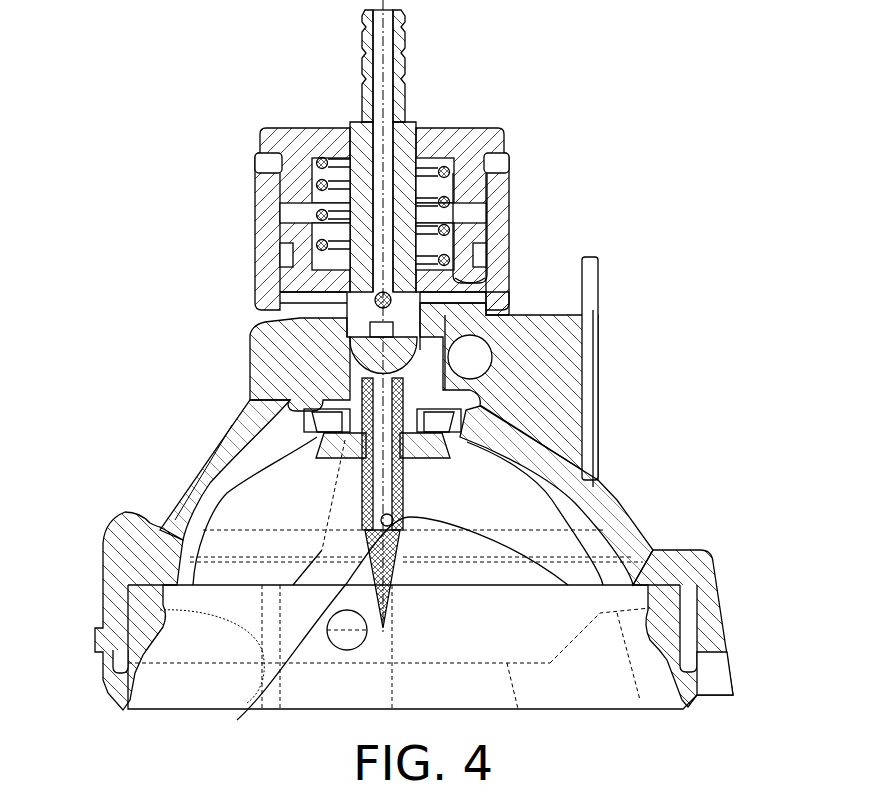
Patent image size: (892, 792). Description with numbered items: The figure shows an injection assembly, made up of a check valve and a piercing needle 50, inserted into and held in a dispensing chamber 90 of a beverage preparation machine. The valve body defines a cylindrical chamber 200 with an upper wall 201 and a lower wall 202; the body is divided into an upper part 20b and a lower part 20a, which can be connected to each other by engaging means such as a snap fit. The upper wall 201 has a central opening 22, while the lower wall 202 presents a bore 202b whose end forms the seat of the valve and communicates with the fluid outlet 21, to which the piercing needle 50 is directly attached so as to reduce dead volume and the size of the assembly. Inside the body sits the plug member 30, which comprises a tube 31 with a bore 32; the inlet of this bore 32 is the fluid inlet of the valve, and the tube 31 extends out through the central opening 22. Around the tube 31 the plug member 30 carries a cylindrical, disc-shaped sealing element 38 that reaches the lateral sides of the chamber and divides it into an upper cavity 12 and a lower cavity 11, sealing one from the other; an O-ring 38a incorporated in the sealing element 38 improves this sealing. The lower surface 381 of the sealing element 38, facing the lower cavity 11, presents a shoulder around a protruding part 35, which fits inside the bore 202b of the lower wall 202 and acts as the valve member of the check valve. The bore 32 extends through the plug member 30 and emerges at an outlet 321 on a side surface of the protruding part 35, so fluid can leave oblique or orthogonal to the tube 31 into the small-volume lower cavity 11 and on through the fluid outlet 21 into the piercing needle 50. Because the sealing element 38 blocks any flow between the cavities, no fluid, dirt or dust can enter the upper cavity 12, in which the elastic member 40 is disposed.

The lower cavity 11 is at (283, 260).
The upper cavity 12 is at (287, 216).
The lower part 20a is at (350, 295).
The upper part 20b is at (503, 133).
The fluid outlet 21 is at (322, 393).
The central opening 22 is at (358, 133).
The plug member 30 is at (425, 315).
The tube 31 is at (400, 57).
The bore 32 is at (380, 33).
The protruding part 35 is at (420, 353).
The sealing element 38 is at (483, 238).
The O-ring 38a is at (478, 272).
The elastic member 40 is at (470, 155).
The piercing needle 50 is at (237, 720).
The dispensing chamber 90 is at (630, 540).
The cylindrical chamber 200 is at (470, 210).
The upper wall 201 is at (296, 138).
The lower wall 202 is at (502, 305).
The bore 202b is at (300, 330).
The outlet 321 is at (345, 312).
The lower surface 381 is at (477, 283).